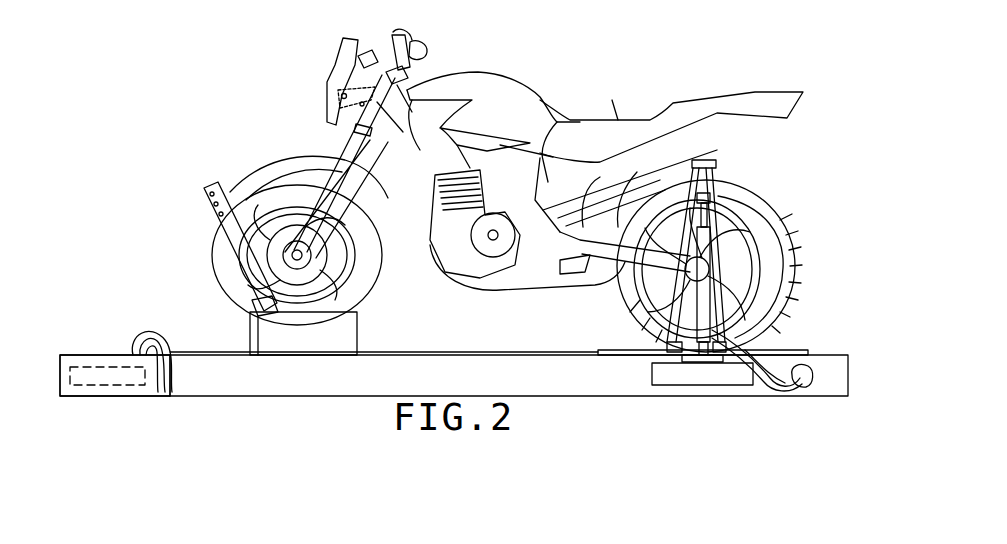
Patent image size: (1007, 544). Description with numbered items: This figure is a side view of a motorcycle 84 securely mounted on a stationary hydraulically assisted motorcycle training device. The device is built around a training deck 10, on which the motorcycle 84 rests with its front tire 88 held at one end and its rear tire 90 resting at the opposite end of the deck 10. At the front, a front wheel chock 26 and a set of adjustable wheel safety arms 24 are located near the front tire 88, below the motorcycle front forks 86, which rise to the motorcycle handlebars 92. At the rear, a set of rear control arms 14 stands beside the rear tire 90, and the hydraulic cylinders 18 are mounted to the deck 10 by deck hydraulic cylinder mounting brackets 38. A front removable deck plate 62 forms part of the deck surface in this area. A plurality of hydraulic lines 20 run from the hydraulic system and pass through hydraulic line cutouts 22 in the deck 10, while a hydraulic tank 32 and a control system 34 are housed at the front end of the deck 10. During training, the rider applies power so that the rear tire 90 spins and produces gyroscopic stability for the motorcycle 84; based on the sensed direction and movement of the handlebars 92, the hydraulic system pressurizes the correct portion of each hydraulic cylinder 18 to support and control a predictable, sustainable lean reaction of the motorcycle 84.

The training deck 10 is at (486, 353).
The rear control arms 14 is at (745, 185).
The hydraulic cylinders 18 is at (786, 236).
The hydraulic lines 20 is at (140, 350).
The hydraulic line cutouts 22 is at (804, 386).
The adjustable wheel safety arms 24 is at (207, 228).
The front wheel chock 26 is at (357, 336).
The hydraulic tank 32 is at (80, 354).
The control system 34 is at (107, 397).
The deck hydraulic cylinder mounting brackets 38 is at (650, 372).
The front removable deck plate 62 is at (605, 350).
The motorcycle 84 is at (618, 108).
The motorcycle front forks 86 is at (338, 147).
The motorcycle front tire 88 is at (203, 258).
The motorcycle rear tire 90 is at (797, 232).
The motorcycle handlebars 92 is at (428, 50).